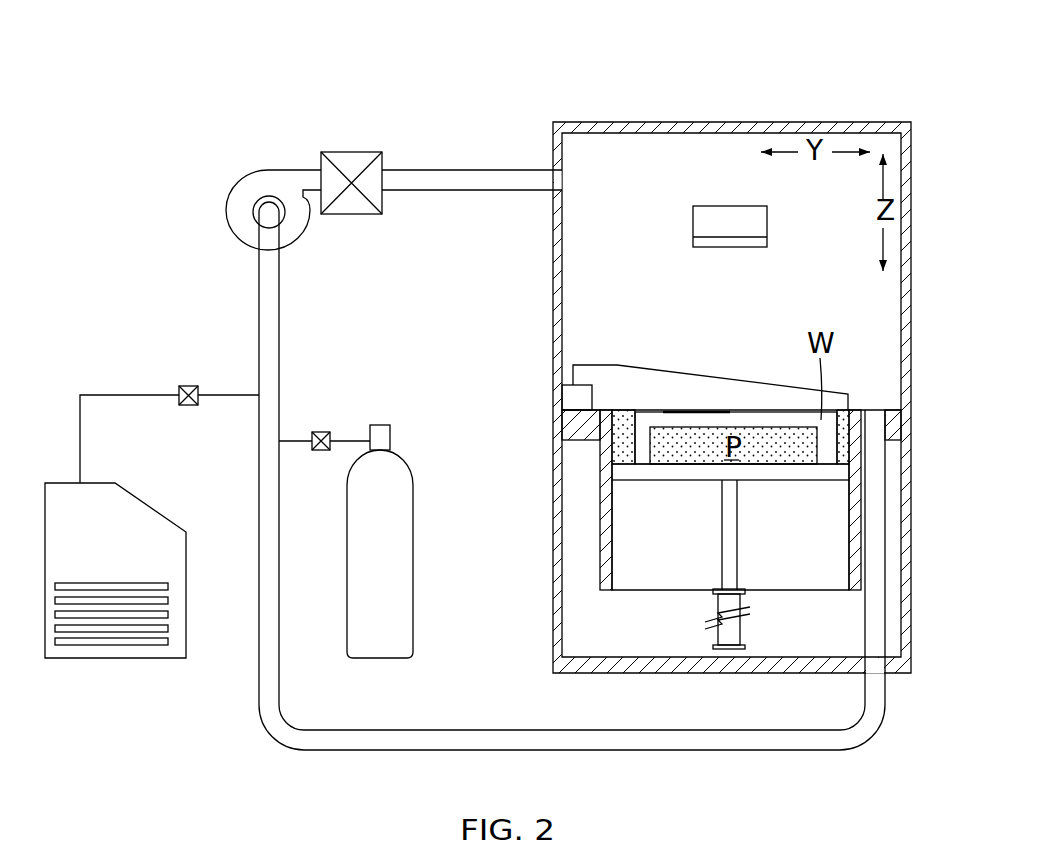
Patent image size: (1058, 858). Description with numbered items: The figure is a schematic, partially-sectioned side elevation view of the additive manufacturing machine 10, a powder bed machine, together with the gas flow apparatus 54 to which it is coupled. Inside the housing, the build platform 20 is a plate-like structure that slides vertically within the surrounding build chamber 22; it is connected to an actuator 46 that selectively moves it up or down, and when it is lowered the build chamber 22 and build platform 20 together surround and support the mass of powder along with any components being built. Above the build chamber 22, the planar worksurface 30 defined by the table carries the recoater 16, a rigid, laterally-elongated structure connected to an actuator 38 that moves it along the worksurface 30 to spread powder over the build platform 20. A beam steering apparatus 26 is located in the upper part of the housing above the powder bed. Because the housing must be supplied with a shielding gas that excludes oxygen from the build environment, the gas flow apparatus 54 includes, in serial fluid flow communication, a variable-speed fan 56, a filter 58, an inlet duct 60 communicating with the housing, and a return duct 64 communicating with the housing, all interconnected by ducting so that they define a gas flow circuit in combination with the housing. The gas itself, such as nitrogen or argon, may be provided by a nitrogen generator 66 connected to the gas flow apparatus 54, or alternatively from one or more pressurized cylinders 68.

The additive manufacturing machine 10 is at (723, 60).
The recoater 16 is at (668, 380).
The build platform 20 is at (652, 480).
The build chamber 22 is at (604, 578).
The beam steering apparatus 26 is at (706, 222).
The worksurface 30 is at (891, 394).
The actuator 38 is at (577, 400).
The actuator 46 is at (737, 541).
The gas flow apparatus 54 is at (180, 328).
The variable-speed fan 56 is at (253, 190).
The filter 58 is at (332, 156).
The inlet duct 60 is at (446, 180).
The return duct 64 is at (880, 570).
The nitrogen generator 66 is at (121, 576).
The pressurized cylinder 68 is at (399, 576).